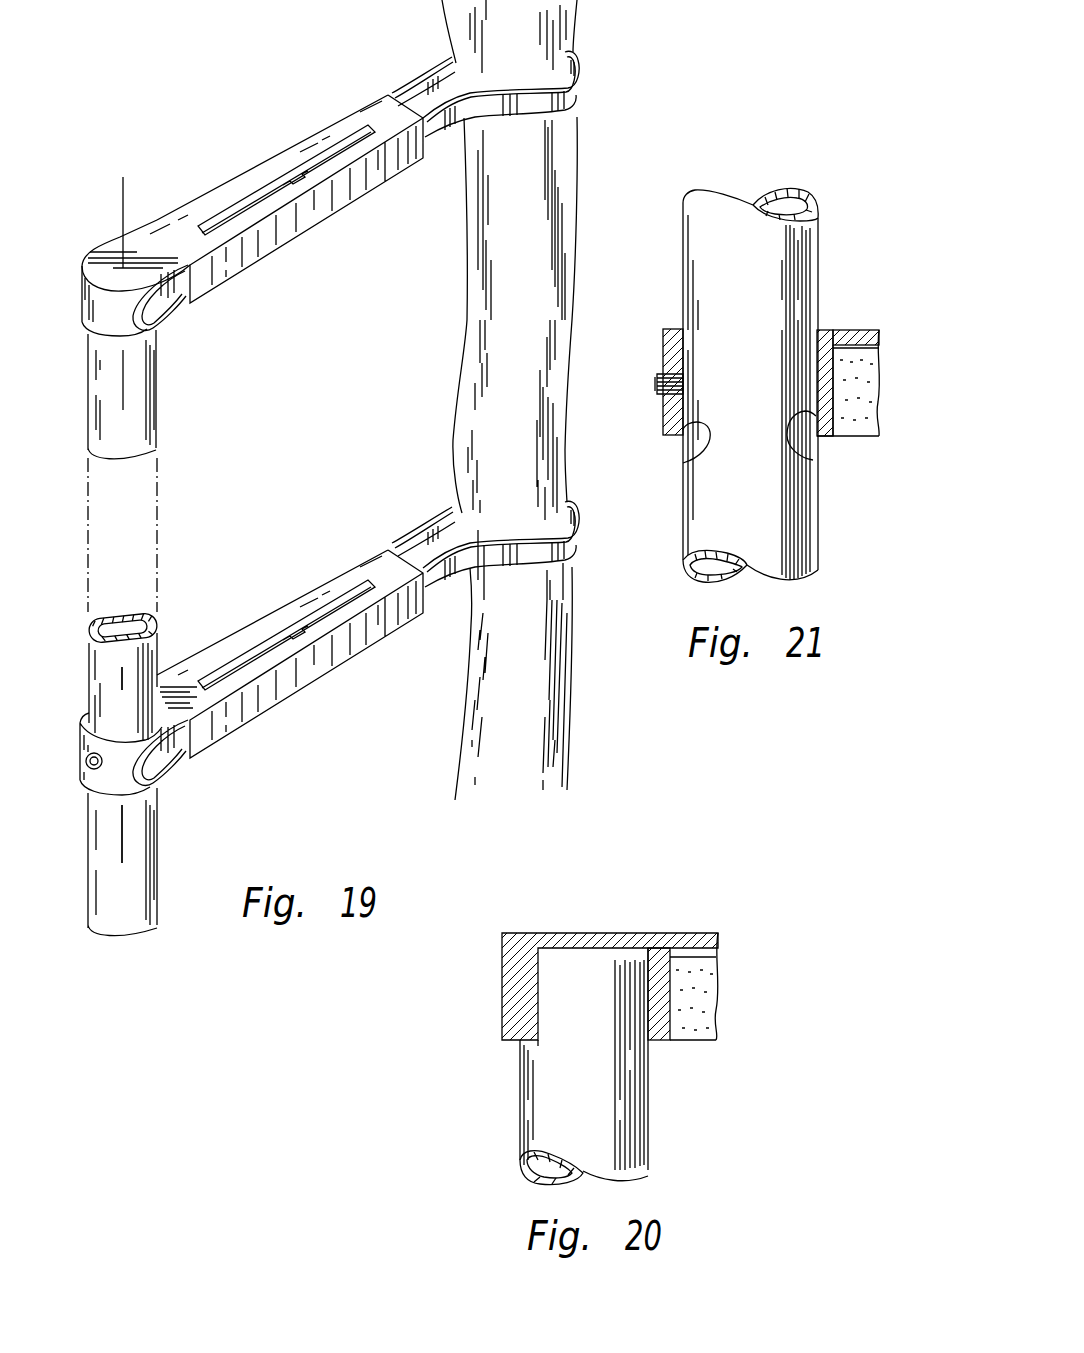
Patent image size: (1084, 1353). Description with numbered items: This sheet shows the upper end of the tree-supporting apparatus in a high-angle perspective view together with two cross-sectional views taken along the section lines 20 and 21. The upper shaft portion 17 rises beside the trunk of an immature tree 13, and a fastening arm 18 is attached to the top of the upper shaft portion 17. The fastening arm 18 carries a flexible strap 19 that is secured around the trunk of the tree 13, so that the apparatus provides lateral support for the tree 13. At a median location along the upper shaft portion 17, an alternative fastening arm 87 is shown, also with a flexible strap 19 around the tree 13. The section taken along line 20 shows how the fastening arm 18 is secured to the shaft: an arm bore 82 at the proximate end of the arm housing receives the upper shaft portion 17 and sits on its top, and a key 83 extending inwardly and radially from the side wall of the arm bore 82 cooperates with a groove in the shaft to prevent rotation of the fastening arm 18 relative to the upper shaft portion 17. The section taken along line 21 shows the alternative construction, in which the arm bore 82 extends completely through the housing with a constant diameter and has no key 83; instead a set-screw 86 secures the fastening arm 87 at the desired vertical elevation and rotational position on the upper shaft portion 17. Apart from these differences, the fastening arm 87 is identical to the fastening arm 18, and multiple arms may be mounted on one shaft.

In FIG. 19, the tree 13 is at (560, 193).
In FIG. 19, the upper shaft portion 17 is at (150, 430).
In FIG. 21, the upper shaft portion 17 is at (818, 498).
In FIG. 20, the upper shaft portion 17 is at (654, 1096).
In FIG. 19, the fastening arm 18 is at (263, 129).
In FIG. 20, the fastening arm 18 is at (592, 932).
In FIG. 19, the flexible strap 19 is at (453, 122).
In FIG. 19, the section line 20— 20 is at (137, 200).
In FIG. 19, the section line 21— 21 is at (132, 693).
In FIG. 21, the arm bore 82 is at (683, 453).
In FIG. 20, the key 83 is at (538, 1040).
In FIG. 19, the set-screw 86 is at (86, 760).
In FIG. 21, the set-screw 86 is at (657, 380).
In FIG. 19, the fastening arm 87 is at (277, 561).
In FIG. 21, the fastening arm 87 is at (822, 330).